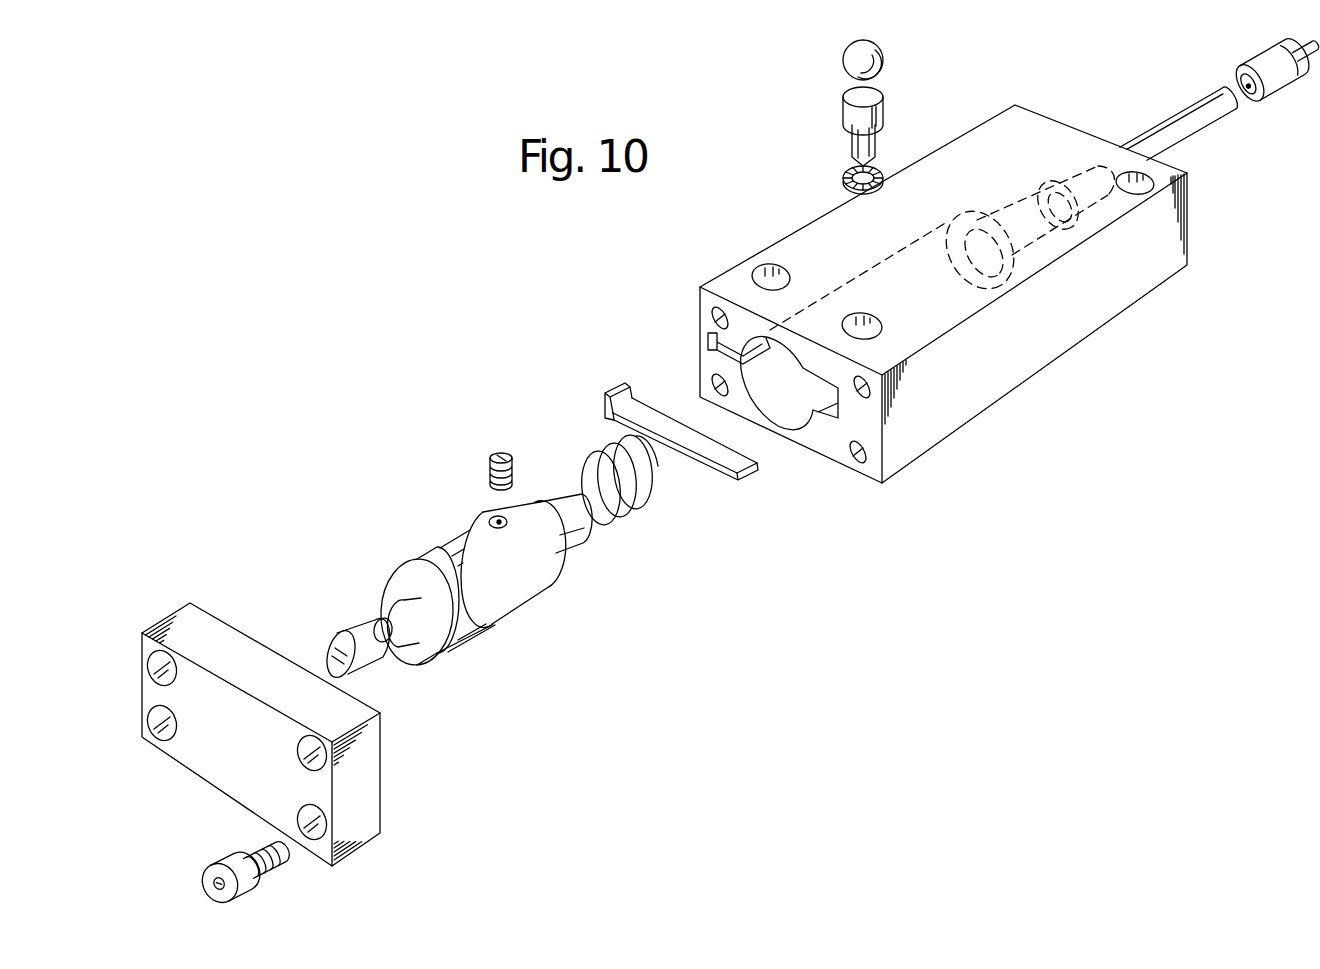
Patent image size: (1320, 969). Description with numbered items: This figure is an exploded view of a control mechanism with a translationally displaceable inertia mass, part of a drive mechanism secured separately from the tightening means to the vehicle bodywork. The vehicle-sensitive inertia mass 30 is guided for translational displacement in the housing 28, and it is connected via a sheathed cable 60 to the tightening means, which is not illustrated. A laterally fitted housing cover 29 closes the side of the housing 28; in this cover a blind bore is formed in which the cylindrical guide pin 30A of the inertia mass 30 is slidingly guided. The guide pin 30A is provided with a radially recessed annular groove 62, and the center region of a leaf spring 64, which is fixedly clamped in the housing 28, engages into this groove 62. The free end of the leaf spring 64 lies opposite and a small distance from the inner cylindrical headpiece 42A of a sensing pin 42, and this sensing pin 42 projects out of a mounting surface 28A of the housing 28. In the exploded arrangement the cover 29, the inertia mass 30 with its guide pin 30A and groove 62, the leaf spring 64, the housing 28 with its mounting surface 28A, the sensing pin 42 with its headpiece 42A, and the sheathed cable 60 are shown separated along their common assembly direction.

The housing 28 is at (943, 321).
The mounting surface 28A is at (830, 462).
The housing cover 29 is at (363, 782).
The inertia mass 30 is at (457, 602).
The guide pin 30A is at (382, 658).
The sensing pin 42 is at (831, 126).
The headpiece 42A is at (848, 114).
The sheathed cable 60 is at (1213, 118).
The annular groove 62 is at (375, 626).
The leaf spring 64 is at (670, 420).